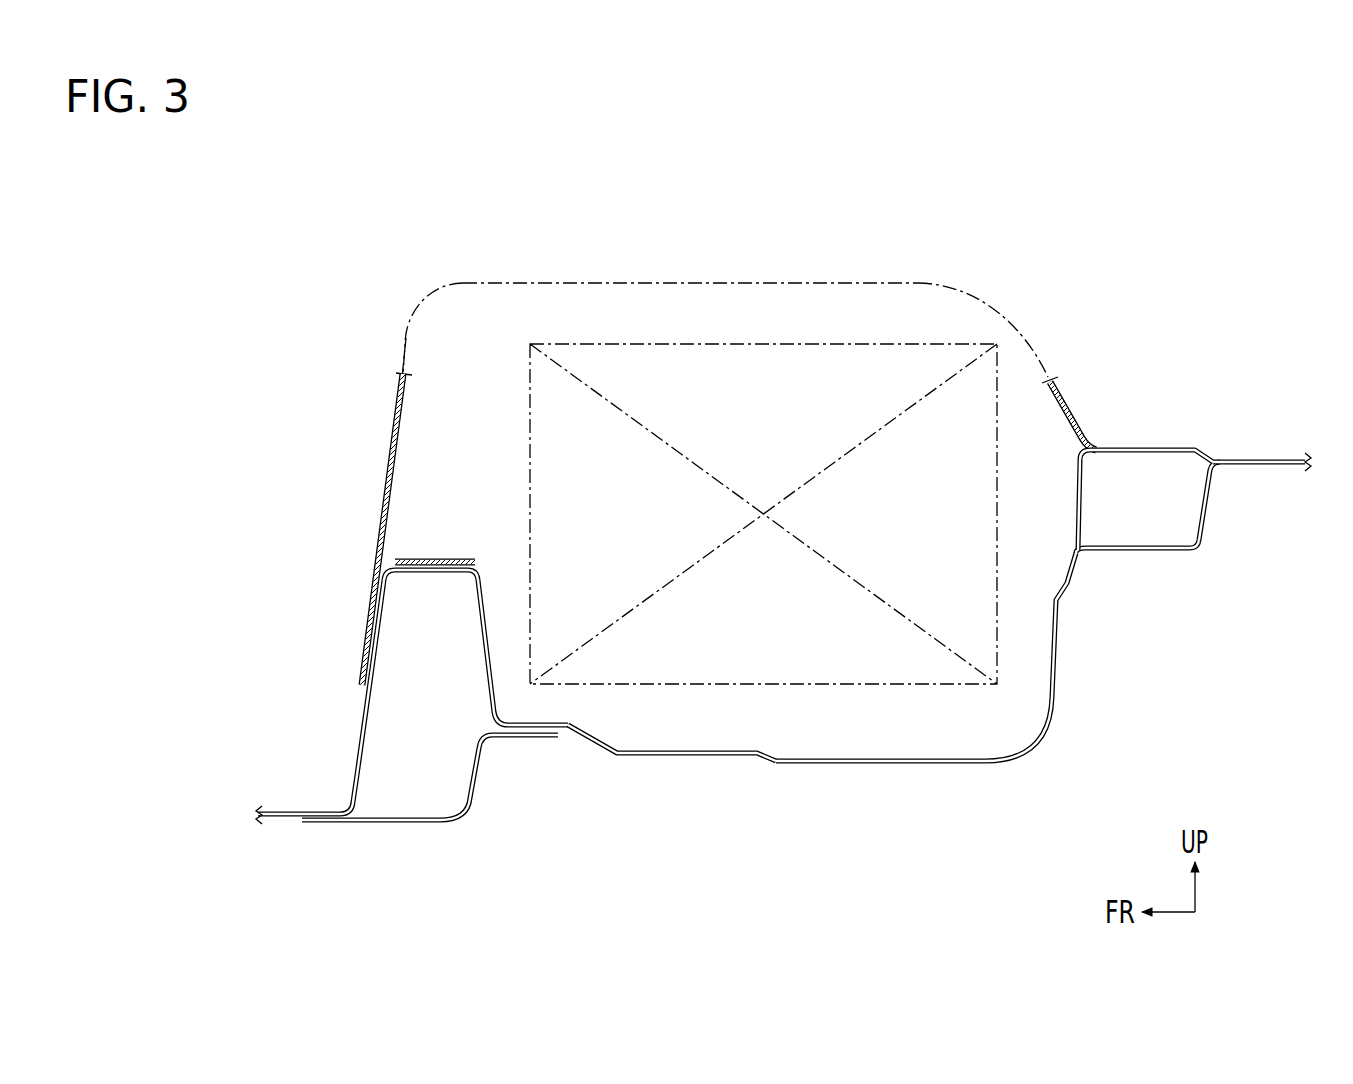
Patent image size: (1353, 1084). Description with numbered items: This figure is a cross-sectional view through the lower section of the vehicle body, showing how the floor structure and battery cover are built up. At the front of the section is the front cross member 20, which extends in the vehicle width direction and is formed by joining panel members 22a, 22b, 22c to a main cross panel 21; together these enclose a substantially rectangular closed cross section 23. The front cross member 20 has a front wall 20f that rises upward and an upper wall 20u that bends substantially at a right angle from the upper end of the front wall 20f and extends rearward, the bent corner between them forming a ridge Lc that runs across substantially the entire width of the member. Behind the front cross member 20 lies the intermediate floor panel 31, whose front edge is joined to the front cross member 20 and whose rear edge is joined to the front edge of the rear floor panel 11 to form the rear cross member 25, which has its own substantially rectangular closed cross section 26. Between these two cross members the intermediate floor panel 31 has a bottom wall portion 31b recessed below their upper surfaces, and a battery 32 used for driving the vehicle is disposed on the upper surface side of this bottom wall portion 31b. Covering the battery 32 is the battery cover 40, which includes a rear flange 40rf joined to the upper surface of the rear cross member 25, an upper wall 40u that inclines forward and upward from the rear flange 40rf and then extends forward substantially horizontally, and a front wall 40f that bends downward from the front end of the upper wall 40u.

The battery cover 40 is at (958, 285).
The upper wall 40u is at (640, 282).
The front wall 40f is at (387, 460).
The rear flange 40rf is at (1118, 446).
The battery 32 is at (787, 340).
The ridge Lc is at (383, 537).
The front cross member 20 is at (420, 703).
The upper wall 20u is at (435, 558).
The front wall 20f is at (368, 640).
The main cross panel 21 is at (358, 720).
The panel member 22a is at (385, 827).
The panel member 22b is at (490, 630).
The panel member 22c is at (455, 574).
The closed cross section 23 is at (432, 822).
The intermediate floor panel 31 is at (812, 768).
The bottom wall portion 31b is at (714, 758).
The rear cross member 25 is at (1155, 558).
The closed cross section 26 is at (1173, 507).
The rear floor panel 11 is at (1287, 480).